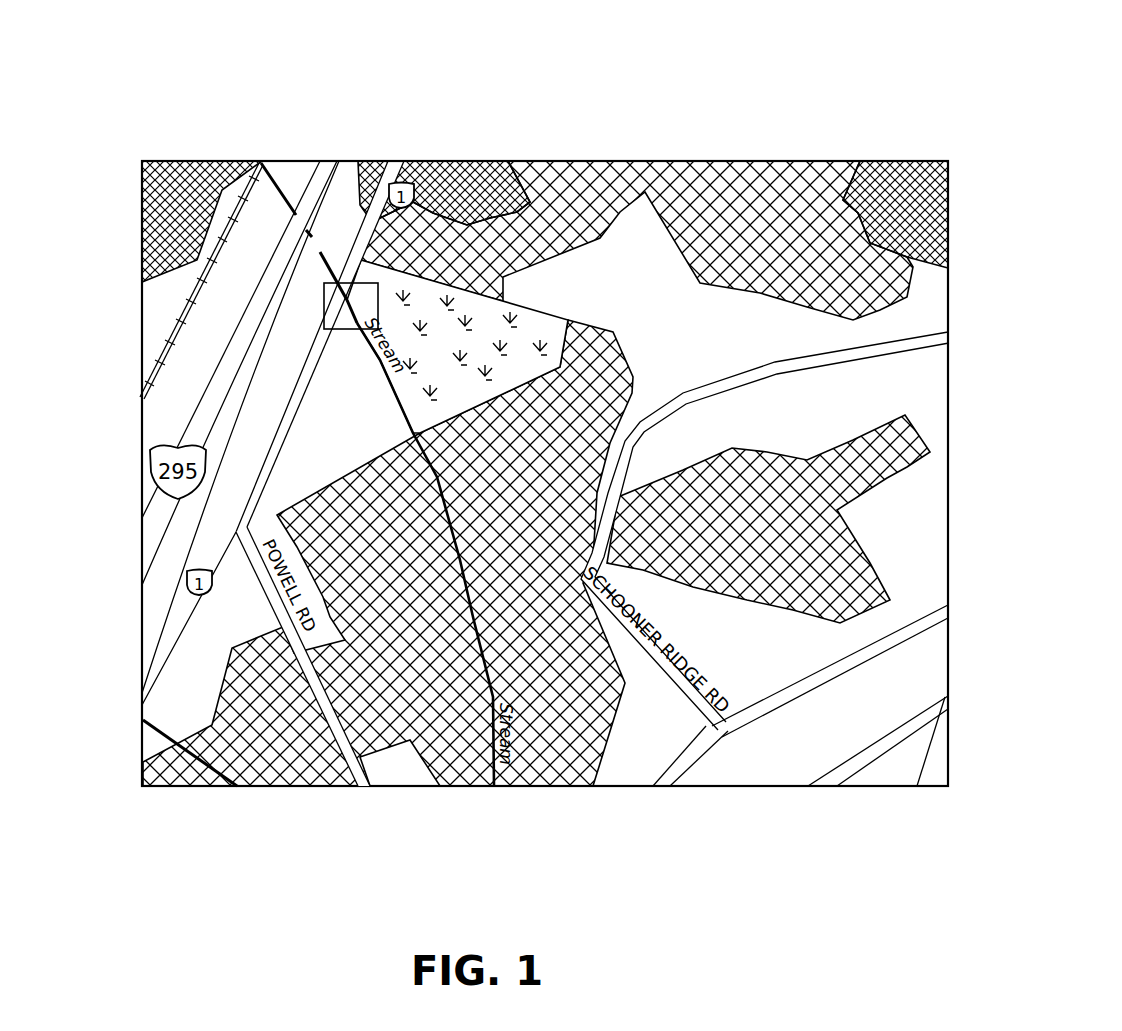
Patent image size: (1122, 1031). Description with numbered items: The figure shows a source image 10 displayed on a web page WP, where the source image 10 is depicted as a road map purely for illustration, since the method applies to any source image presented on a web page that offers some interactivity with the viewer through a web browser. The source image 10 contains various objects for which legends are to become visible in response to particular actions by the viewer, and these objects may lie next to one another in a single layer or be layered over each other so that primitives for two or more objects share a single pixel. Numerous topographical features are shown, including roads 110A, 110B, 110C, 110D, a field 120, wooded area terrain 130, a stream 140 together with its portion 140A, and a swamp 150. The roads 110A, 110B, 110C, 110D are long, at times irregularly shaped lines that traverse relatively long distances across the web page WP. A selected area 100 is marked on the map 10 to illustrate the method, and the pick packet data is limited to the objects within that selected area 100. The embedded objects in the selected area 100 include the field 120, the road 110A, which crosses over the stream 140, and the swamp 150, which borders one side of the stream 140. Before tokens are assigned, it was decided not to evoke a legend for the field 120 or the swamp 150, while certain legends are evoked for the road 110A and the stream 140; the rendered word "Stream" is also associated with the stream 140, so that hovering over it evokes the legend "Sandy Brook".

The source image 10 is at (688, 128).
The selected area 100 is at (340, 305).
The road 110A is at (158, 661).
The road 110B is at (148, 508).
The road 110C is at (363, 777).
The road 110D is at (748, 713).
The field 120 is at (340, 297).
The wooded area terrain 130 is at (447, 733).
The stream 140 is at (286, 188).
The boundary line segment 140A is at (343, 283).
The swamp 150 is at (423, 303).
The web page WP is at (203, 787).